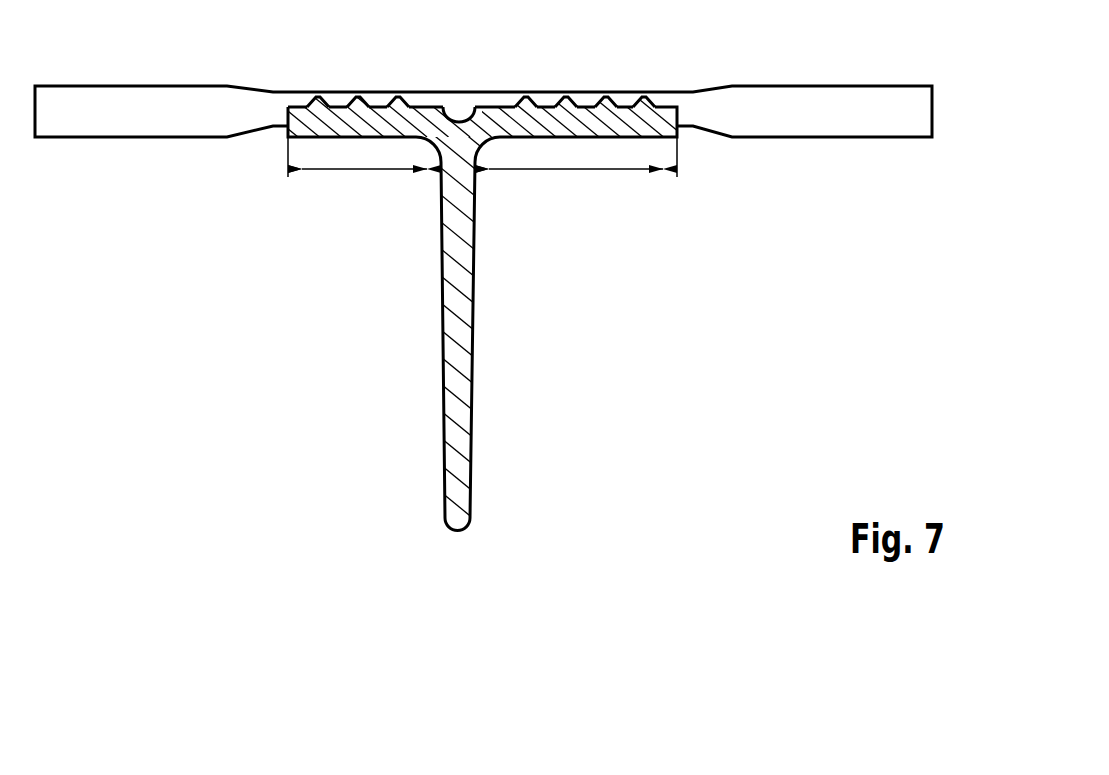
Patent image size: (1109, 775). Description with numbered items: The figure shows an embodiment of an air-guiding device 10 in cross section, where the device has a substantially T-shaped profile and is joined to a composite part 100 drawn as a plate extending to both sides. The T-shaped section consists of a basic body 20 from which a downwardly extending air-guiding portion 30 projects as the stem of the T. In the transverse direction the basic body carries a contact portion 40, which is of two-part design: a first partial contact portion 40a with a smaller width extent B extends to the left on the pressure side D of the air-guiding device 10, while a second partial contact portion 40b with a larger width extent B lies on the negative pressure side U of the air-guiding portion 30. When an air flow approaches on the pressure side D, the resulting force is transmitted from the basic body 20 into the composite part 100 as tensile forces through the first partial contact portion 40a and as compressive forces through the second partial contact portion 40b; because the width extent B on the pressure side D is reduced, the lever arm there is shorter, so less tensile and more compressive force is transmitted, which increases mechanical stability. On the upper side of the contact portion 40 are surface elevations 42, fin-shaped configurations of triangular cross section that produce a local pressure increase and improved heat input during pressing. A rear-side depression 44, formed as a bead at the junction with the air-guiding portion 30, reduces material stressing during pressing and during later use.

The composite part 100 is at (813, 86).
The air-guiding device 10 is at (260, 310).
The basic body 20 is at (441, 291).
The air-guiding portion 30 is at (460, 462).
The contact portion 40 is at (596, 128).
The first partial contact portion 40a is at (343, 115).
The second partial contact portion 40b is at (628, 115).
The surface elevations 42 is at (356, 97).
The rear-side depression 44 is at (457, 113).
The width extent B is at (361, 172).
The pressure side D is at (405, 365).
The negative pressure side U is at (513, 363).